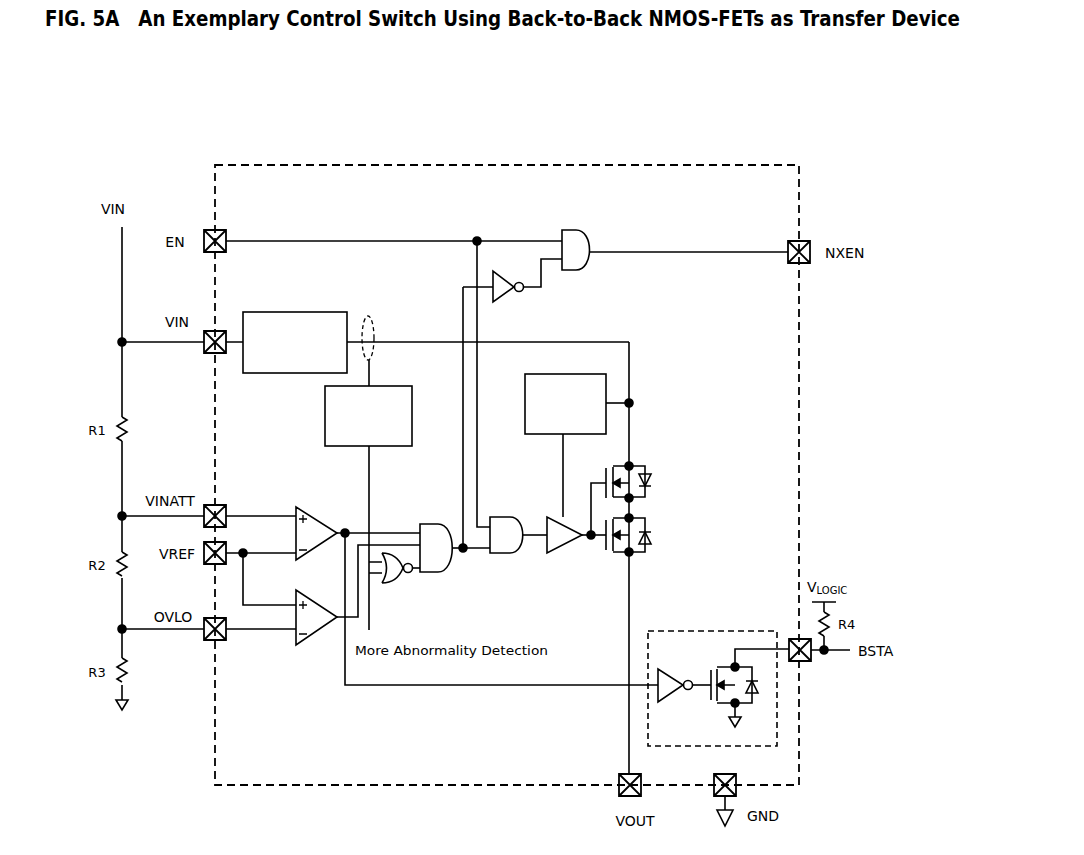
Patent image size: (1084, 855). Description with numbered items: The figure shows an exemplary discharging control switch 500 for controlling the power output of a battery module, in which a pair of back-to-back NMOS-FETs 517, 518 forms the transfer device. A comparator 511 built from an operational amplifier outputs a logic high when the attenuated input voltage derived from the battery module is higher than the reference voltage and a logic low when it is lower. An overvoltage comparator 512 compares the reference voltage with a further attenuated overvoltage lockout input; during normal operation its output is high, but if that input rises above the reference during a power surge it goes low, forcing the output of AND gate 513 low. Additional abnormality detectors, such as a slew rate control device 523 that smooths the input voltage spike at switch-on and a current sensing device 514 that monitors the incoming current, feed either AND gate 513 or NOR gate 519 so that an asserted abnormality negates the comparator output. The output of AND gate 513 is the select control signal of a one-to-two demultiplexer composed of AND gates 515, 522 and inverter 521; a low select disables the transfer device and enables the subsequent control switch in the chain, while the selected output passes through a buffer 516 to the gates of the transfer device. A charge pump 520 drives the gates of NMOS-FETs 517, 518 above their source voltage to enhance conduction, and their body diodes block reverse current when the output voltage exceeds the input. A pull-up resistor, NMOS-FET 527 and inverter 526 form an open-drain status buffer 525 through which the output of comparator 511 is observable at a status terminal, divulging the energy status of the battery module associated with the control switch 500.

The discharging control switch 500 is at (497, 164).
The comparator 511 is at (307, 512).
The overvoltage comparator 512 is at (312, 646).
The AND gate 513 is at (440, 576).
The current sensing device 514 is at (324, 412).
The AND gate 515 is at (503, 559).
The buffer / gate driver 516 is at (563, 553).
The NMOS-FET 517 is at (648, 462).
The NMOS-FET 518 is at (640, 556).
The NOR gate 519 is at (395, 588).
The charge pump 520 is at (546, 436).
The inverter 521 is at (505, 298).
The AND gate 522 is at (592, 272).
The slew rate control device 523 is at (290, 312).
The open-drain status buffer 525 is at (694, 630).
The inverter 526 is at (677, 700).
The NMOS-FET 527 is at (752, 706).